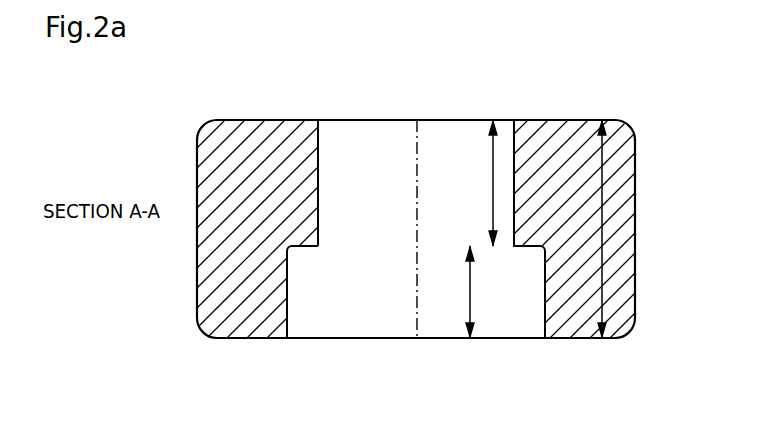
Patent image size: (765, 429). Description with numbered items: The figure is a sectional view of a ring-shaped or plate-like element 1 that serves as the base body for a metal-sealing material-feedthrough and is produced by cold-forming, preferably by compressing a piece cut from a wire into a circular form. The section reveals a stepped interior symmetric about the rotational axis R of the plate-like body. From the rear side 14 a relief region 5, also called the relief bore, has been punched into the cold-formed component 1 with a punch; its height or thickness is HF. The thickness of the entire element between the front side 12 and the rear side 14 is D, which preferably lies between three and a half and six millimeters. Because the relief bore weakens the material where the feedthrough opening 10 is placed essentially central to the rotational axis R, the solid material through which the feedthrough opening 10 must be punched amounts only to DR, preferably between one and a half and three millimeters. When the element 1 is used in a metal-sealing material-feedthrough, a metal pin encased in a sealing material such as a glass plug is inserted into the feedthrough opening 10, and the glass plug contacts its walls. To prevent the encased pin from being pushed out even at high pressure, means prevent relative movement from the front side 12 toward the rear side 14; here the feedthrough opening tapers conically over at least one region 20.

The ring-shaped or plate-like element 1 is at (592, 72).
The relief region 5 is at (343, 318).
The feedthrough opening 10 is at (461, 135).
The front side 12 is at (240, 120).
The rear side 14 is at (238, 339).
The region 20 is at (318, 160).
The rotational axis R is at (417, 312).
The height of the relief bore HF is at (470, 295).
The thickness of the region to be punched out DR is at (493, 192).
The thickness of the plate-like element D is at (603, 203).